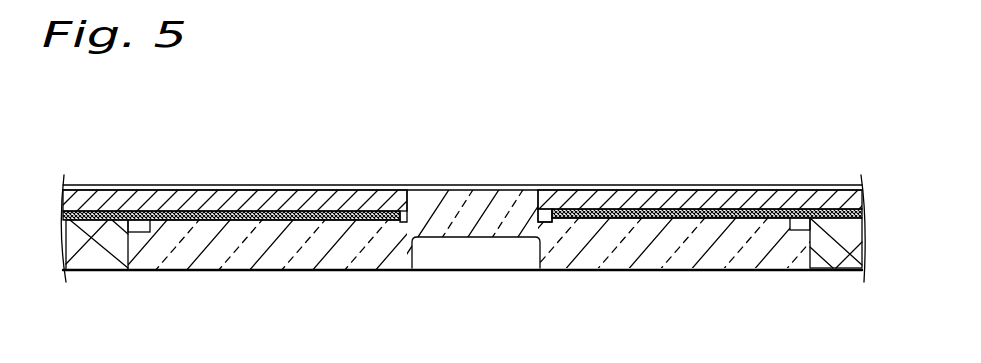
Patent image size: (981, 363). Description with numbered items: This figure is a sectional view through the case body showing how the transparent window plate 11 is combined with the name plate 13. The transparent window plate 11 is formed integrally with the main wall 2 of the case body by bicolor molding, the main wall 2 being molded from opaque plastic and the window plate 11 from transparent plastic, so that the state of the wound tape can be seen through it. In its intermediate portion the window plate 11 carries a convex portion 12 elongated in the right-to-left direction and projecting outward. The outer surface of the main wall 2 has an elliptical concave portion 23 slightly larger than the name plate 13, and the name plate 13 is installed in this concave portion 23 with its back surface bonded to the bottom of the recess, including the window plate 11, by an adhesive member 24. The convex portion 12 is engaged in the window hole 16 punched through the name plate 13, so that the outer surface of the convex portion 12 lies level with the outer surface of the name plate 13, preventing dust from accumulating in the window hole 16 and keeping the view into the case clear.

The main wall 2 is at (72, 232).
The transparent window plate 11 is at (303, 265).
The convex portion 12 is at (442, 195).
The name plate 13 is at (263, 188).
The window hole 16 is at (538, 195).
The concave portion 23 is at (827, 195).
The adhesive member 24 is at (664, 195).